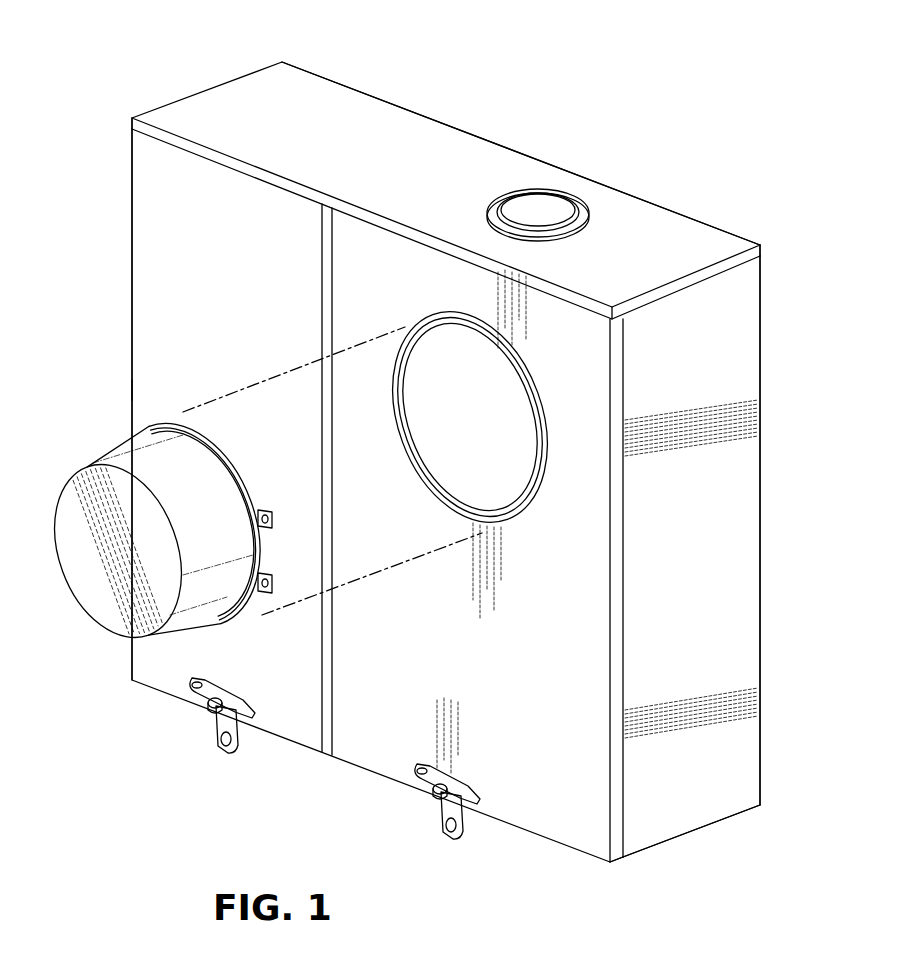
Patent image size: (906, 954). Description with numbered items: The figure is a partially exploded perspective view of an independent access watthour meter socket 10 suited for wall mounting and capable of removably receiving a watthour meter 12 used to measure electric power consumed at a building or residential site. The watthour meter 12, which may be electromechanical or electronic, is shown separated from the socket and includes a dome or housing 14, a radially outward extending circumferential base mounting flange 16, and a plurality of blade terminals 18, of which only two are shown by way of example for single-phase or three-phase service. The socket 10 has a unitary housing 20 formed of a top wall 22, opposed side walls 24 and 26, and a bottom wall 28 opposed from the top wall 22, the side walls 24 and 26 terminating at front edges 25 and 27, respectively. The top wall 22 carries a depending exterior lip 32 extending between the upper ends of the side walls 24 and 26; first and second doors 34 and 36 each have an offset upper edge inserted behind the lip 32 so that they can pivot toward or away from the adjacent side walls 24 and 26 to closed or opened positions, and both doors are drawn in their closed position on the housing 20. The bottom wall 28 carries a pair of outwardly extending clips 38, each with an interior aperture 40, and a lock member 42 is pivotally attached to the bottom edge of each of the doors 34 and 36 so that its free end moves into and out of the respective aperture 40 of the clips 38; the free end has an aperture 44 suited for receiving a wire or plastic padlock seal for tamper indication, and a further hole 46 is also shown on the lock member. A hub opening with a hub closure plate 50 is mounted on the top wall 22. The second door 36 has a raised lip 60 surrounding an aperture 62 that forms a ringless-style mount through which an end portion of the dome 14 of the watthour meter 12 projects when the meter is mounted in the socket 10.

The watthour meter socket 10 is at (137, 78).
The watthour meter 12 is at (70, 460).
The dome or housing 14 is at (83, 576).
The base mounting flange 16 is at (225, 448).
The blade terminals 18 is at (270, 514).
The unitary housing 20 is at (521, 183).
The top wall 22 is at (630, 210).
The side wall 24 is at (132, 238).
The front edge of side wall 25 is at (132, 388).
The side wall 26 is at (743, 595).
The front edge of side wall 27 is at (613, 832).
The bottom wall 28 is at (700, 830).
The exterior lip 32 is at (190, 147).
The first door 34 is at (150, 273).
The second door 36 is at (590, 362).
The clips 38 is at (233, 745).
The interior aperture 40 is at (215, 708).
The lock member 42 is at (200, 692).
The aperture 44 is at (422, 773).
The mounting hole 46 is at (213, 738).
The hub closure plate 50 is at (543, 210).
The raised lip 60 is at (525, 507).
The aperture 62 is at (520, 405).